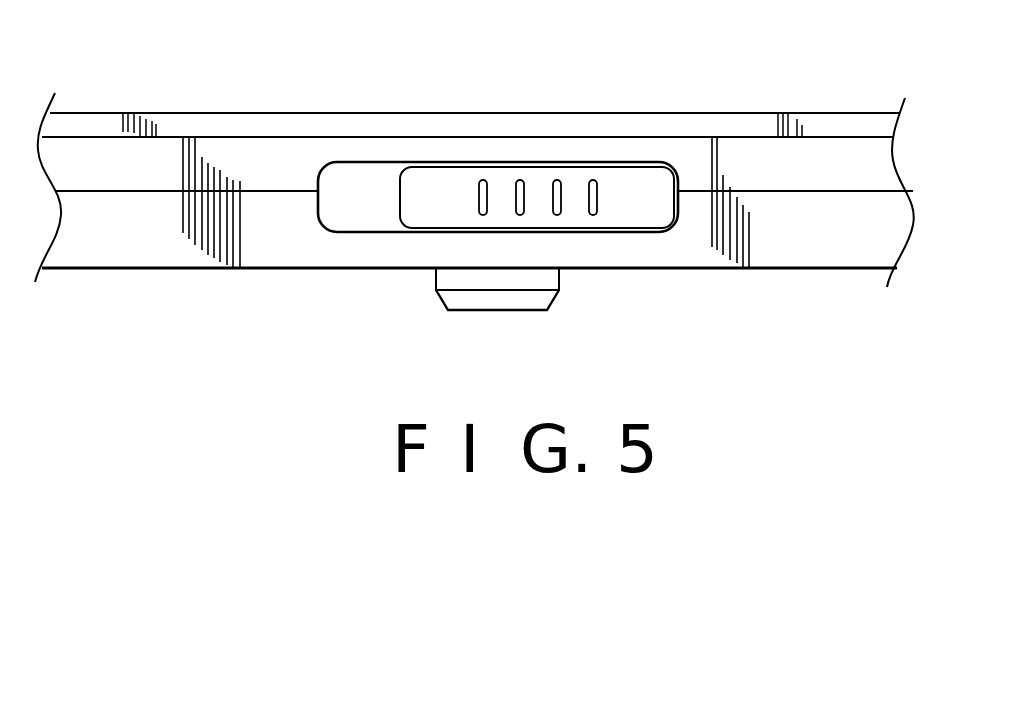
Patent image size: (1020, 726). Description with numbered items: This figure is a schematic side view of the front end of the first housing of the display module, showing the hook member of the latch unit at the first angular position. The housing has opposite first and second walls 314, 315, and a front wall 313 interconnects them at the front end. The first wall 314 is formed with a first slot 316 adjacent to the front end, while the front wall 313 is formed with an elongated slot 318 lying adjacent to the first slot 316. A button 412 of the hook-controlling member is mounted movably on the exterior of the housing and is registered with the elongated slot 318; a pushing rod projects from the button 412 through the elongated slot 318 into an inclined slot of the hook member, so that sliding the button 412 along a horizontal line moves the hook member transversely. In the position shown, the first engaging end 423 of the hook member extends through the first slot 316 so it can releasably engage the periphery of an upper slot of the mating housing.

The front wall 313 is at (832, 253).
The first wall 314 is at (755, 268).
The second wall 315 is at (758, 113).
The first slot 316 is at (433, 270).
The elongated slot 318 is at (635, 162).
The button 412 is at (648, 215).
The first engaging end 423 is at (533, 303).